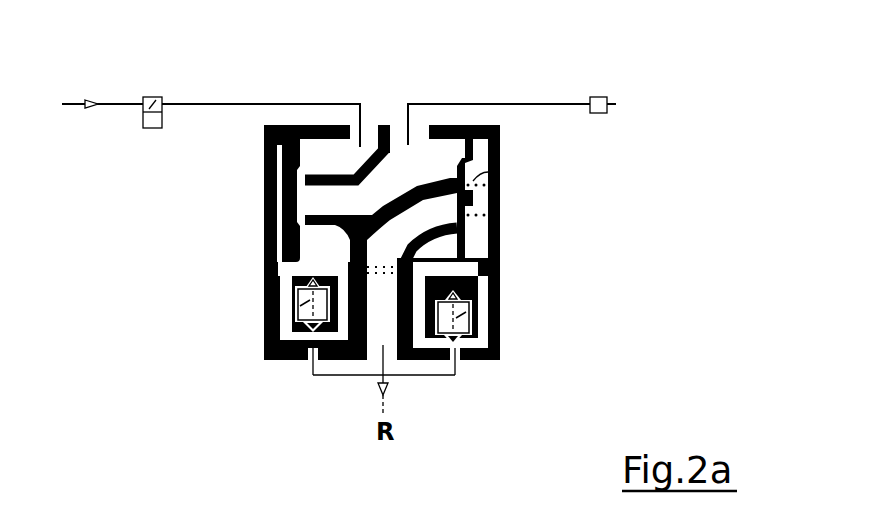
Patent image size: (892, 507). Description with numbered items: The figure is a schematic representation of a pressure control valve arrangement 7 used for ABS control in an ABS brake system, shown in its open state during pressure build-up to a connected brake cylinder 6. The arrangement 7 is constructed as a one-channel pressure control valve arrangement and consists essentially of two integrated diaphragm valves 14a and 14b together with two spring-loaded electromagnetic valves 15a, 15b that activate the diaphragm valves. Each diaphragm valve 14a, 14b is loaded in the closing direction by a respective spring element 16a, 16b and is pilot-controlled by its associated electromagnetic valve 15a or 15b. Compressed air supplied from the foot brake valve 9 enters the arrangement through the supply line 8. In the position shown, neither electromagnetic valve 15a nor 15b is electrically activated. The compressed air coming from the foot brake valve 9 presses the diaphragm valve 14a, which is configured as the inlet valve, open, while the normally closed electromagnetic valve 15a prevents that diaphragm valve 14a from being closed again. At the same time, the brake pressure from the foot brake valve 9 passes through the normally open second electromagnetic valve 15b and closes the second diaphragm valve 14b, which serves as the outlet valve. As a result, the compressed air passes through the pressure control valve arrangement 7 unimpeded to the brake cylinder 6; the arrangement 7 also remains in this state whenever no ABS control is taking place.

The pressure control valve arrangement 7 is at (80, 31).
The foot brake valve 9 is at (150, 106).
The supply line 8 is at (341, 103).
The brake cylinder 6 is at (597, 97).
The spring element 16a is at (264, 171).
The spring element 16b is at (500, 173).
The diaphragm valve 14a is at (264, 238).
The diaphragm valve 14b is at (500, 240).
The electromagnetic valve 15a is at (264, 307).
The electromagnetic valve 15b is at (500, 312).